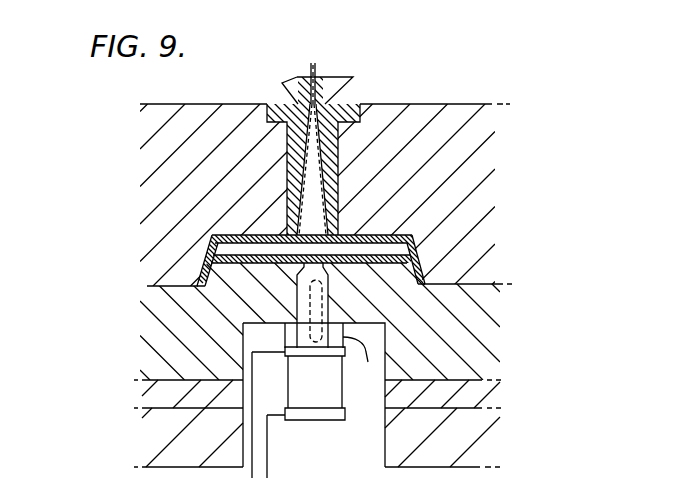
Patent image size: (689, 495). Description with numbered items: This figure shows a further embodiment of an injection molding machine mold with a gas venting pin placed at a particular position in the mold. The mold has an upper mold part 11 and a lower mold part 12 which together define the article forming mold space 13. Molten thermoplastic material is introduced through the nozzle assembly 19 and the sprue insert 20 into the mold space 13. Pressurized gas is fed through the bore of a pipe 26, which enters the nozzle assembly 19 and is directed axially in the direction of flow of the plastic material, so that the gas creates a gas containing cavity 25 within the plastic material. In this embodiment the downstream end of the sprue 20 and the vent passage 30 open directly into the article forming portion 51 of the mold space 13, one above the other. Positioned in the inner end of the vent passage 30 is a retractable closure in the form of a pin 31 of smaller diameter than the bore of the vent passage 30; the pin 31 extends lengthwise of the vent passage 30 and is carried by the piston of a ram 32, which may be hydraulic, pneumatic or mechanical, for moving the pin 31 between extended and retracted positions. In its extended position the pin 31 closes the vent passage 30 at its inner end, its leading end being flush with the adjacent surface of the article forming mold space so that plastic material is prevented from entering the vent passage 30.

The upper mold part 11 is at (162, 172).
The lower mold part 12 is at (162, 319).
The article forming mold space 13 is at (423, 265).
The nozzle assembly 19 is at (283, 85).
The sprue insert 20 is at (340, 110).
The gas containing cavity 25 is at (213, 248).
The pipe 26 is at (311, 65).
The vent passage 30 is at (297, 296).
The pin 31 is at (300, 305).
The ram 32 is at (318, 399).
The article forming portion 51 is at (392, 234).